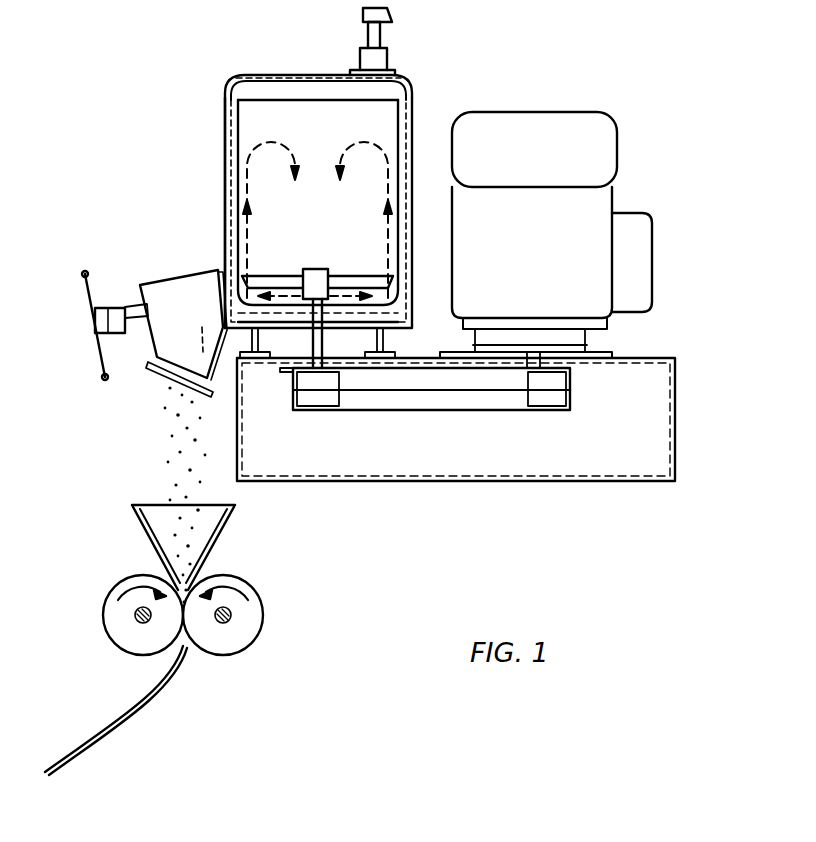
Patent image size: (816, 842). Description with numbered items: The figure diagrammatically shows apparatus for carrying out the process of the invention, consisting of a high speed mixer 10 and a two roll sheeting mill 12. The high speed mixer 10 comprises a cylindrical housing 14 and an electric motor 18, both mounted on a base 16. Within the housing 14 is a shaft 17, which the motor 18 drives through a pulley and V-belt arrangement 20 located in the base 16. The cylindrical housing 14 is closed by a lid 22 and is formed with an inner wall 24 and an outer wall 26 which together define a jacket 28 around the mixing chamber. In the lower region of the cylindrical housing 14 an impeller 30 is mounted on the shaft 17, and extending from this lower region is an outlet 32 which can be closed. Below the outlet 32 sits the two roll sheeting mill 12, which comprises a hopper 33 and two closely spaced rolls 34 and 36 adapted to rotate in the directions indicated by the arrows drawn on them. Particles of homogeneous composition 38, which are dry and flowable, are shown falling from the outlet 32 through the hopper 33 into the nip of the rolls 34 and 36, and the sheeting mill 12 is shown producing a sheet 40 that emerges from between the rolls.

The high speed mixer 10 is at (422, 138).
The two roll sheeting mill 12 is at (194, 670).
The cylindrical housing 14 is at (414, 125).
The base 16 is at (677, 395).
The shaft 17 is at (308, 350).
The electric motor 18 is at (603, 120).
The pulley and V-belt arrangement 20 is at (463, 400).
The lid 22 is at (323, 24).
The inner wall 24 is at (243, 193).
The outer wall 26 is at (225, 122).
The jacket 28 is at (228, 152).
The impeller 30 is at (233, 262).
The outlet 32 is at (157, 367).
The hopper 33 is at (150, 538).
The roll 34 is at (256, 623).
The roll 36 is at (120, 618).
The particles of homogeneous composition 38 is at (176, 432).
The sheet 40 is at (86, 730).